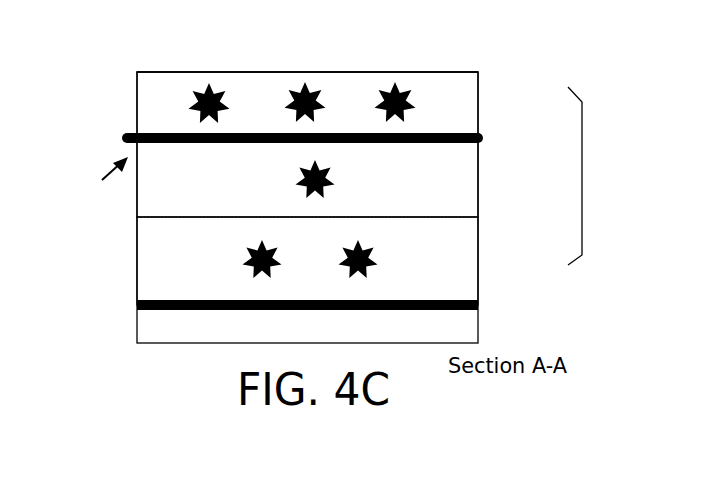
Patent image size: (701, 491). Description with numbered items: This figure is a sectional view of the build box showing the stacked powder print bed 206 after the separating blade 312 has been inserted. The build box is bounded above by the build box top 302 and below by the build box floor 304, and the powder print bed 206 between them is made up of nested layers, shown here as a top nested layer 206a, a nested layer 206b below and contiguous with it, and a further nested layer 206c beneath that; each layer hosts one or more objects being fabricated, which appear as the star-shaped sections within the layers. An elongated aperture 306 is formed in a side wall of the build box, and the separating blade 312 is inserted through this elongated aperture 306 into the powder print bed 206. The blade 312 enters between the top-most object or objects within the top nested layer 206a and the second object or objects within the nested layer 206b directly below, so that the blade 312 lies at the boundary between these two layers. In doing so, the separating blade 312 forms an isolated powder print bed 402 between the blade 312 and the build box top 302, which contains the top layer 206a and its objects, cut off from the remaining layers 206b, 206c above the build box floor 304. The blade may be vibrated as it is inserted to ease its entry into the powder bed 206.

The powder print bed 206 is at (582, 188).
The top nested layer 206a is at (470, 112).
The nested layer 206b is at (470, 180).
The nested layer 206c is at (468, 262).
The build box top 302 is at (267, 72).
The isolated powder print bed 402 is at (445, 88).
The separating blade 312 is at (460, 143).
The build box floor 304 is at (152, 310).
The elongated aperture 306 is at (99, 184).